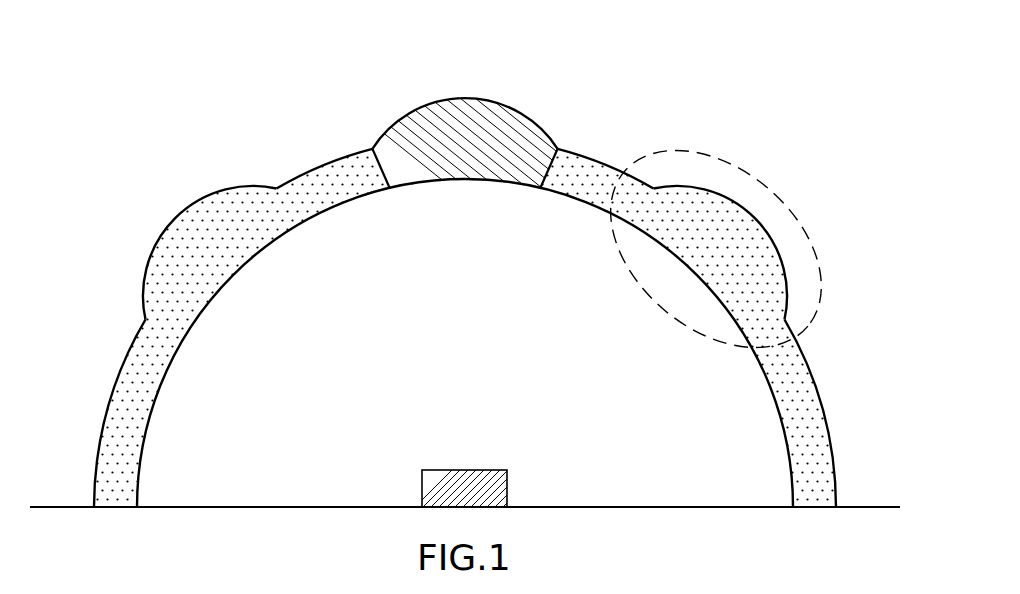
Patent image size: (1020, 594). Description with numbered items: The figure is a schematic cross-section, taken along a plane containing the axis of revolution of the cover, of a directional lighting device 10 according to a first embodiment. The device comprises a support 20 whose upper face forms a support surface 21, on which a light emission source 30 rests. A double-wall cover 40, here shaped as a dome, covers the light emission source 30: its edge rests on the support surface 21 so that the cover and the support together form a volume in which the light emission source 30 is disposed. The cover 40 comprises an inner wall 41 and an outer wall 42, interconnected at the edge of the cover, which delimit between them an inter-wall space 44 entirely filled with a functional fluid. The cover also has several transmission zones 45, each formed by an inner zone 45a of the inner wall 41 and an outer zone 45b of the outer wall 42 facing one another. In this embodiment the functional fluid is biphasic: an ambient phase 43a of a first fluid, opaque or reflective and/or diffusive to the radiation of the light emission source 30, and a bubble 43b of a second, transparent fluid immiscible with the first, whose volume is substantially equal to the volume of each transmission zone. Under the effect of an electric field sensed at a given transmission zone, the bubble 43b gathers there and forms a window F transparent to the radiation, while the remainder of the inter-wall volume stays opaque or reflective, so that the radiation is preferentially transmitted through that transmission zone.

The directional lighting device 10 is at (183, 124).
The support 20 is at (200, 508).
The support surface 21 is at (665, 507).
The light emission source 30 is at (448, 478).
The double-wall cover 40 is at (812, 375).
The inner wall 41 is at (135, 472).
The outer wall 42 is at (106, 410).
The ambient phase 43a is at (150, 357).
The bubble 43b is at (395, 125).
The inter-wall space 44 is at (318, 185).
The transmission zone 45 is at (688, 156).
The inner zone 45a is at (250, 265).
The outer zone 45b is at (175, 218).
The window F is at (520, 108).